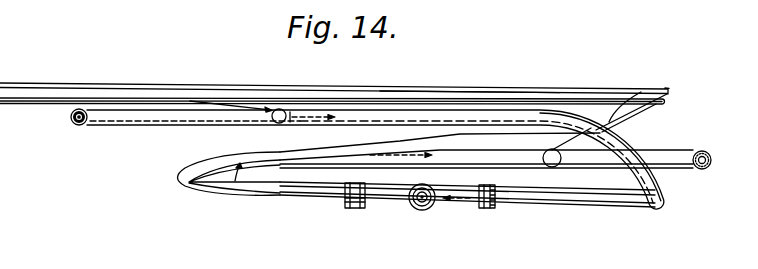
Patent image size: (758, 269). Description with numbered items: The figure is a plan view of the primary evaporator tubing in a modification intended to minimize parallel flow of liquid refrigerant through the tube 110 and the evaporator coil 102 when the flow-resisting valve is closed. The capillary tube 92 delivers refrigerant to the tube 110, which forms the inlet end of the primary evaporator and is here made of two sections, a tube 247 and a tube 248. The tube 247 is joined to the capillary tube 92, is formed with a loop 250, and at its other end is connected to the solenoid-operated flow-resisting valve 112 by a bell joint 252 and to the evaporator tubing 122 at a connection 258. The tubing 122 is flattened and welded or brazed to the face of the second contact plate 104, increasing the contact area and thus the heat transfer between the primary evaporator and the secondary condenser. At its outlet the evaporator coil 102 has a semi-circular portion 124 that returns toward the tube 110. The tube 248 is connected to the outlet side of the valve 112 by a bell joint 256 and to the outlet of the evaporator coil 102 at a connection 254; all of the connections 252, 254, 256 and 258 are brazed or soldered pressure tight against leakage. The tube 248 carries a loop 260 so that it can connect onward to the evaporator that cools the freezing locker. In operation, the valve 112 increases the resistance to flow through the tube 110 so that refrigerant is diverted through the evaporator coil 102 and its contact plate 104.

The capillary tube 92 is at (72, 118).
The evaporator coil 102 is at (187, 67).
The second contact plate 104 is at (93, 64).
The tube 110 is at (165, 126).
The solenoid-operated flow-resisting valve 112 is at (427, 209).
The tubing 122 is at (433, 60).
The semi-circular portion 124 is at (647, 91).
The tube 247 is at (232, 116).
The tube 248 is at (303, 200).
The loop 250 is at (592, 128).
The bell joint 252 is at (490, 210).
The connection 254 is at (546, 151).
The bell joint 256 is at (360, 210).
The connection 258 is at (282, 108).
The loop 260 is at (240, 172).